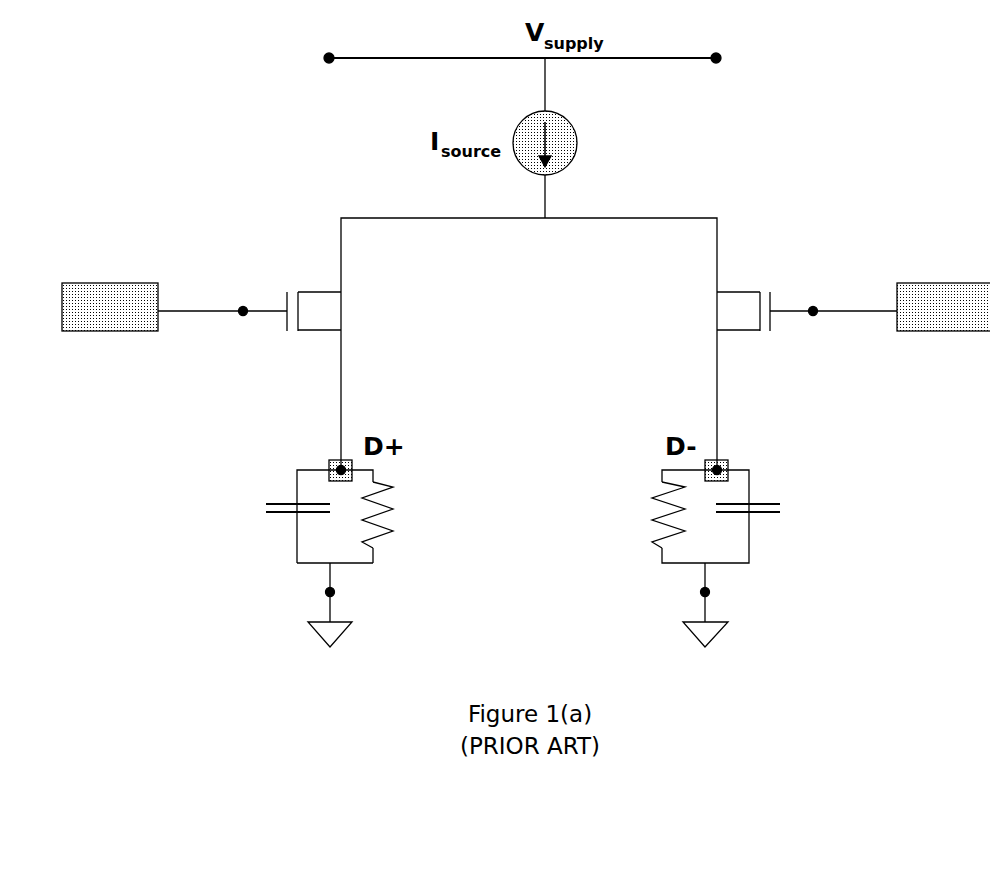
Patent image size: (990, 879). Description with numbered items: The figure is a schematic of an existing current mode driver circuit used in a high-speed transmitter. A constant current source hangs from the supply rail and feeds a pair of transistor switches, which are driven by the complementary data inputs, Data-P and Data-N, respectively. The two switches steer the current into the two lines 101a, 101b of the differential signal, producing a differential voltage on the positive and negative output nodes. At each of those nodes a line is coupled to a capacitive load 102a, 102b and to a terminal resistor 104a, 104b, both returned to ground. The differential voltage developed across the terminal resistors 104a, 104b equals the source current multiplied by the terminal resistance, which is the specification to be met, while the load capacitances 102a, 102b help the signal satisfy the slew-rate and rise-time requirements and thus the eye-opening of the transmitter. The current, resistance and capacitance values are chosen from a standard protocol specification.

The line 101a is at (328, 386).
The line 101b is at (717, 386).
The capacitive load 102a is at (277, 527).
The capacitive load 102b is at (752, 527).
The terminal resistor 104a is at (400, 527).
The terminal resistor 104b is at (648, 527).